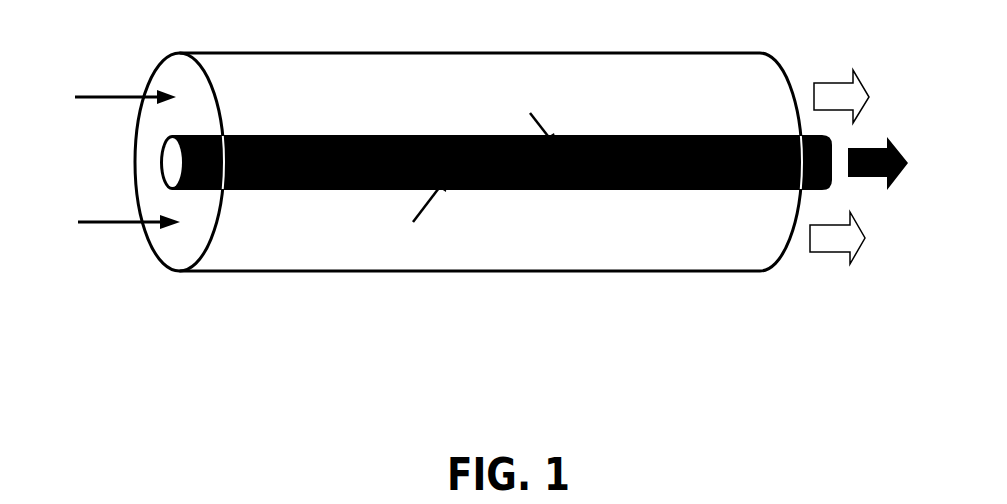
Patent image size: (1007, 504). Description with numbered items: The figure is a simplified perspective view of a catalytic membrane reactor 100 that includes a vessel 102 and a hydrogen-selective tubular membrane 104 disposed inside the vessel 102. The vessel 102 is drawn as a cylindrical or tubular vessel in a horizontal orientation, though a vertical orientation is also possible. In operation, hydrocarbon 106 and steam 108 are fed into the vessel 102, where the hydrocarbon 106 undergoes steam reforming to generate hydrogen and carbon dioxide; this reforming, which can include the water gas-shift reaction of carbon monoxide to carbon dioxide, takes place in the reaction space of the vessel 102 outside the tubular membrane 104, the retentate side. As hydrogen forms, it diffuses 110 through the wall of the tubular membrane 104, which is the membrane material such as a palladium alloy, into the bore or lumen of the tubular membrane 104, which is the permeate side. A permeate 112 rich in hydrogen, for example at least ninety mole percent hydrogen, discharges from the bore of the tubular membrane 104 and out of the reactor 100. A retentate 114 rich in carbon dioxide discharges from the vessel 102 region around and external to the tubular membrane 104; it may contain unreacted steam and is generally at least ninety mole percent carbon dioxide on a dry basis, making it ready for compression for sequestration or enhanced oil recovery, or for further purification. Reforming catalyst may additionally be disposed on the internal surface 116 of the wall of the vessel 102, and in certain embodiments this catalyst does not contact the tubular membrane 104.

The catalytic membrane reactor 100 is at (489, 216).
The vessel 102 is at (648, 271).
The hydrogen-selective tubular membrane 104 is at (438, 135).
The hydrocarbon 106 is at (118, 93).
The steam 108 is at (115, 226).
The hydrogen diffusion 110 is at (430, 204).
The permeate 112 is at (870, 179).
The retentate 114 is at (826, 82).
The internal surface 116 is at (297, 270).